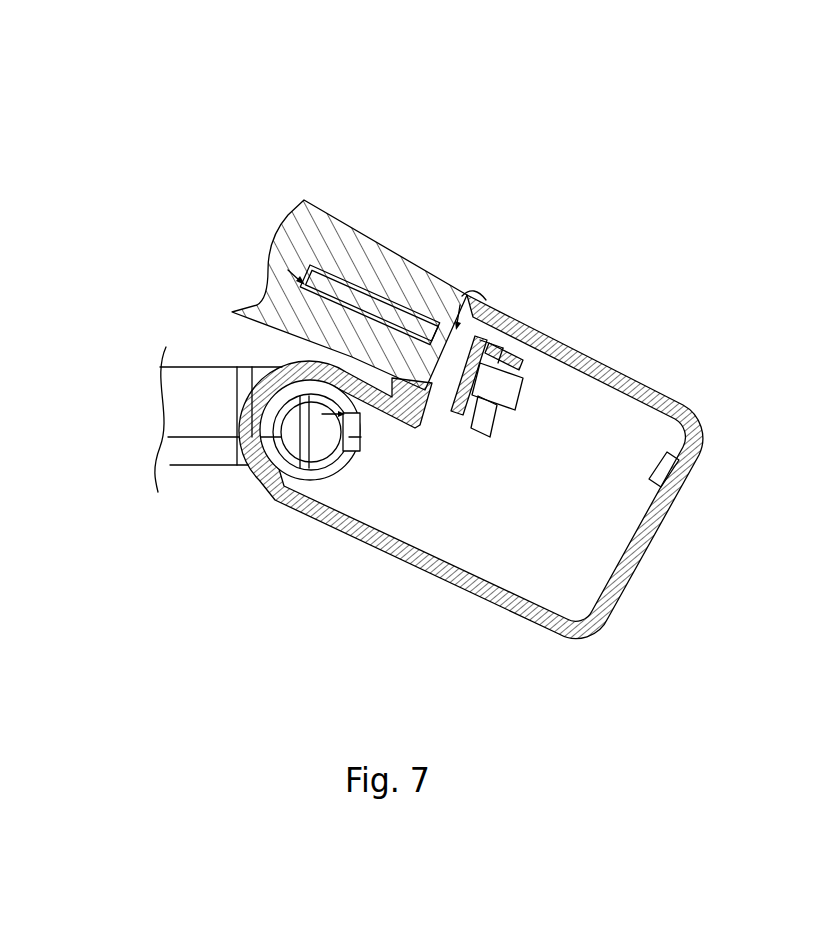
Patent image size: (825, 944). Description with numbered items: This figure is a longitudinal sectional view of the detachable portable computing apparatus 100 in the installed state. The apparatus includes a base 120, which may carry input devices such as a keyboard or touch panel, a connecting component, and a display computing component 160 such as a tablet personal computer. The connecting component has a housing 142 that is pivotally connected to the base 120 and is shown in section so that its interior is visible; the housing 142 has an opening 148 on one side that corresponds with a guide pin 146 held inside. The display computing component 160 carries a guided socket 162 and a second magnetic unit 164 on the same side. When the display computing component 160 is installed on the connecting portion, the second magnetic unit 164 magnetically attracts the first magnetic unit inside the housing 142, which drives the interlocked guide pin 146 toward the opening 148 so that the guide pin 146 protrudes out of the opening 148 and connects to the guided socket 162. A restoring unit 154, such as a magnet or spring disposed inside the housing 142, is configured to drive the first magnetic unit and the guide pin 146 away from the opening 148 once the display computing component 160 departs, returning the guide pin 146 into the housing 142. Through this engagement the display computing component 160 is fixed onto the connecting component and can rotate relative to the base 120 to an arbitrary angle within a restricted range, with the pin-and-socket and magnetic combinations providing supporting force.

The detachable portable computing apparatus 100 is at (796, 157).
The base 120 is at (203, 457).
The housing 142 is at (690, 402).
The guide pin 146 is at (352, 290).
The opening 148 is at (486, 300).
The restoring unit 154 is at (693, 468).
The display computing component 160 is at (297, 232).
The guided socket 162 is at (288, 270).
The second magnetic unit 164 is at (460, 305).